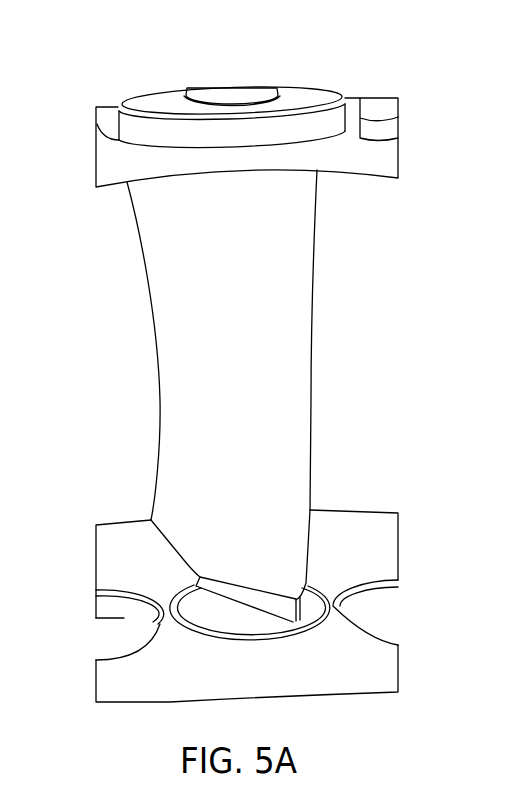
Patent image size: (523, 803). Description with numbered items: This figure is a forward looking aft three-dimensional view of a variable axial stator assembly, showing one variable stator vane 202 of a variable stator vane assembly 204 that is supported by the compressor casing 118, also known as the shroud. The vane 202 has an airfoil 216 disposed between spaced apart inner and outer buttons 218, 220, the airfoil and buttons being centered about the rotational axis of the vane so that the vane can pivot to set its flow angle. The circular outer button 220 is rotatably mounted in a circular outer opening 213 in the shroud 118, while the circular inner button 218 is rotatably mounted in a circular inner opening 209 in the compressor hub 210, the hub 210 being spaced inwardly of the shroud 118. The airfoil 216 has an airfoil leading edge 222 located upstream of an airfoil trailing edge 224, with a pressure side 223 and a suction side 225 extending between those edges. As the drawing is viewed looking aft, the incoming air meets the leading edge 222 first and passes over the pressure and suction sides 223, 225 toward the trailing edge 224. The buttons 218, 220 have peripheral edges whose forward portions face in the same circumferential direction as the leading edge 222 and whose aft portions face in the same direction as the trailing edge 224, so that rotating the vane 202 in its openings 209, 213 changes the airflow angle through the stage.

The compressor casing 118 is at (360, 178).
The variable stator vane 202 is at (358, 305).
The variable stator vane assembly 204 is at (400, 74).
The inner opening 209 is at (382, 620).
The hub 210 is at (140, 520).
The outer opening 213 is at (100, 147).
The airfoil 216 is at (236, 396).
The inner button 218 is at (218, 626).
The outer button 220 is at (320, 92).
The airfoil leading edge 222 is at (311, 411).
The pressure side 223 is at (286, 313).
The airfoil trailing edge 224 is at (159, 383).
The suction side 225 is at (174, 291).